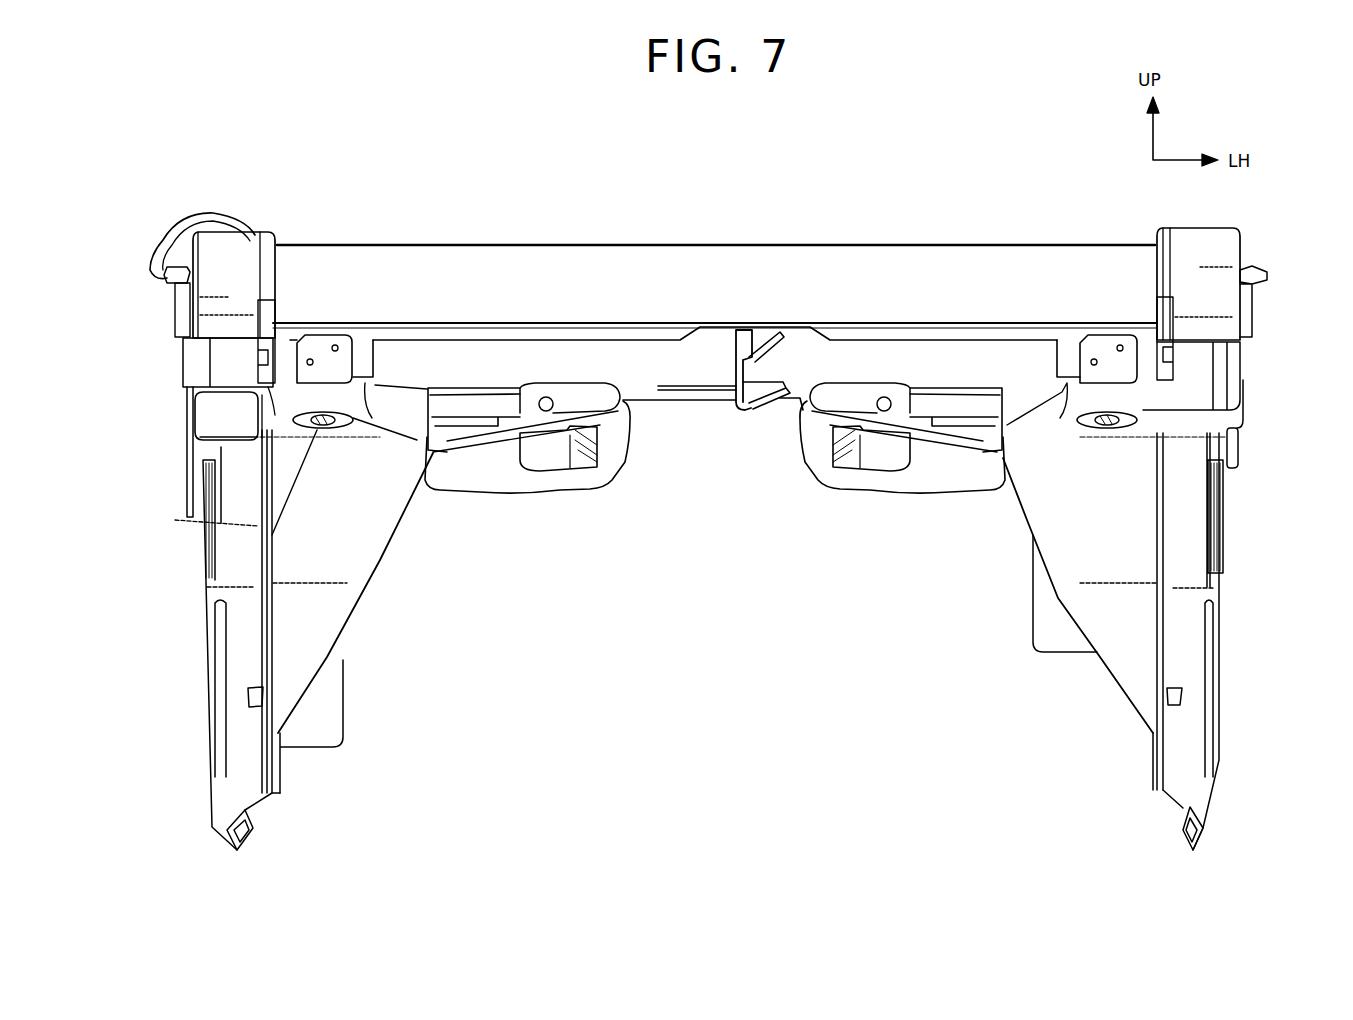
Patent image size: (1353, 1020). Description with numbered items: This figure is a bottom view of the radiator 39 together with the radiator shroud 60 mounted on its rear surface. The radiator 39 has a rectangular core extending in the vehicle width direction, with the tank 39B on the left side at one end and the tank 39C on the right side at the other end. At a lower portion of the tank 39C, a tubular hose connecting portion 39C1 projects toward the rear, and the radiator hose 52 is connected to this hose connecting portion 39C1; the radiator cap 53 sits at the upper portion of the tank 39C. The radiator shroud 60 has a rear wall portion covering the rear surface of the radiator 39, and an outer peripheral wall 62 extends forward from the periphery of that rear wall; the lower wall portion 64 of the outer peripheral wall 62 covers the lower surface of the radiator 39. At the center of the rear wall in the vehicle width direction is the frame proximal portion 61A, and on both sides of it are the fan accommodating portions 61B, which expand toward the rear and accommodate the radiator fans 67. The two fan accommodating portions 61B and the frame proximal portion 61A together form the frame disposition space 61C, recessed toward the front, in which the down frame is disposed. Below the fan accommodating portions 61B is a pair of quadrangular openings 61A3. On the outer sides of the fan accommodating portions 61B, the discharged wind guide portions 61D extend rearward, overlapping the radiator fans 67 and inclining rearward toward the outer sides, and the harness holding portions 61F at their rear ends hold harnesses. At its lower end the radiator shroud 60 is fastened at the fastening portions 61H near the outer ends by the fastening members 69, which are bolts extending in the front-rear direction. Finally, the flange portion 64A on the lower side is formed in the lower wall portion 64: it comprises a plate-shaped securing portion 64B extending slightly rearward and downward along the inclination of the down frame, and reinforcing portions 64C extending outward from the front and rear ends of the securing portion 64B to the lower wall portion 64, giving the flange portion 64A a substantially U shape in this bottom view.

The radiator 39 is at (662, 246).
The tank on the left side 39B is at (1213, 255).
The tank on the right side 39C is at (222, 295).
The hose connecting portion 39C1 is at (220, 409).
The radiator hose 52 is at (180, 492).
The radiator cap 53 is at (177, 233).
The radiator shroud 60 is at (694, 327).
The frame proximal portion 61A is at (709, 400).
The openings 61A3 is at (577, 383).
The fan accommodating portions 61B is at (514, 487).
The frame disposition space 61C is at (770, 480).
The discharged wind guide portions 61D is at (378, 572).
The harness holding portions 61F is at (235, 852).
The fastening portions 61H is at (347, 434).
The outer peripheral wall 62 is at (430, 355).
The lower wall portion 64 is at (719, 282).
The flange portion on the lower side 64A is at (746, 325).
The securing portion 64B is at (727, 377).
The reinforcing portions 64C is at (770, 380).
The radiator fans 67 is at (490, 403).
The fastening members 69 is at (338, 430).